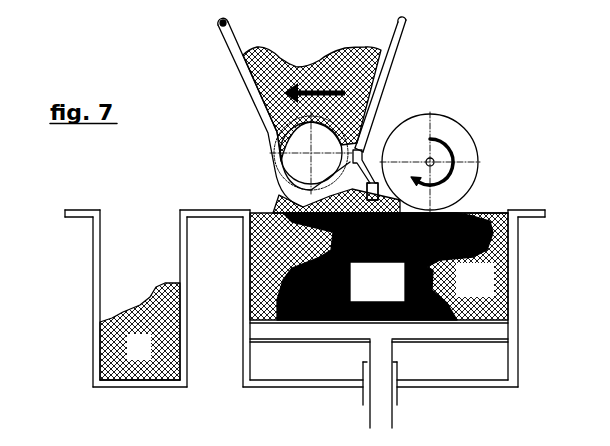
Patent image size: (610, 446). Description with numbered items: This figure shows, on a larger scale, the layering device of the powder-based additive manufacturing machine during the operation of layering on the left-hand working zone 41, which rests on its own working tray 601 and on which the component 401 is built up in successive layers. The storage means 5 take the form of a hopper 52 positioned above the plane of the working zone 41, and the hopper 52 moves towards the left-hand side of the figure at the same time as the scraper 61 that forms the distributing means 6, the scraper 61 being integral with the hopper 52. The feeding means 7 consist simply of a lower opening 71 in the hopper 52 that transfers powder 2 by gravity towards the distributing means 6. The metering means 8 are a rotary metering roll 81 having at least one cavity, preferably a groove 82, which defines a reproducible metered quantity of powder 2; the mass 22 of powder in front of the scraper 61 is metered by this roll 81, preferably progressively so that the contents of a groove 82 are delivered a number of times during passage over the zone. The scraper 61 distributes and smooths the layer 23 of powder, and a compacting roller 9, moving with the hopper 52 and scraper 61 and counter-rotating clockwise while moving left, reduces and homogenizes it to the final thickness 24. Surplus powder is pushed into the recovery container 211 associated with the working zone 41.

The powder 2 is at (144, 358).
The storage means 5 is at (425, 50).
The distributing means 6 is at (370, 149).
The feeding means 7 is at (243, 119).
The metering means 8 is at (255, 161).
The compacting roller 9 is at (455, 138).
The mass of powder 22 is at (303, 207).
The layer of powder 23 is at (467, 208).
The final thickness 24 is at (502, 230).
The left-hand working zone 41 is at (553, 186).
The hopper 52 is at (220, 24).
The scraper 61 is at (371, 192).
The lower opening 71 is at (311, 190).
The metering roll 81 is at (294, 128).
The groove 82 is at (344, 140).
The recovery container 211 is at (155, 262).
The component 401 is at (399, 292).
The working tray 601 is at (418, 327).